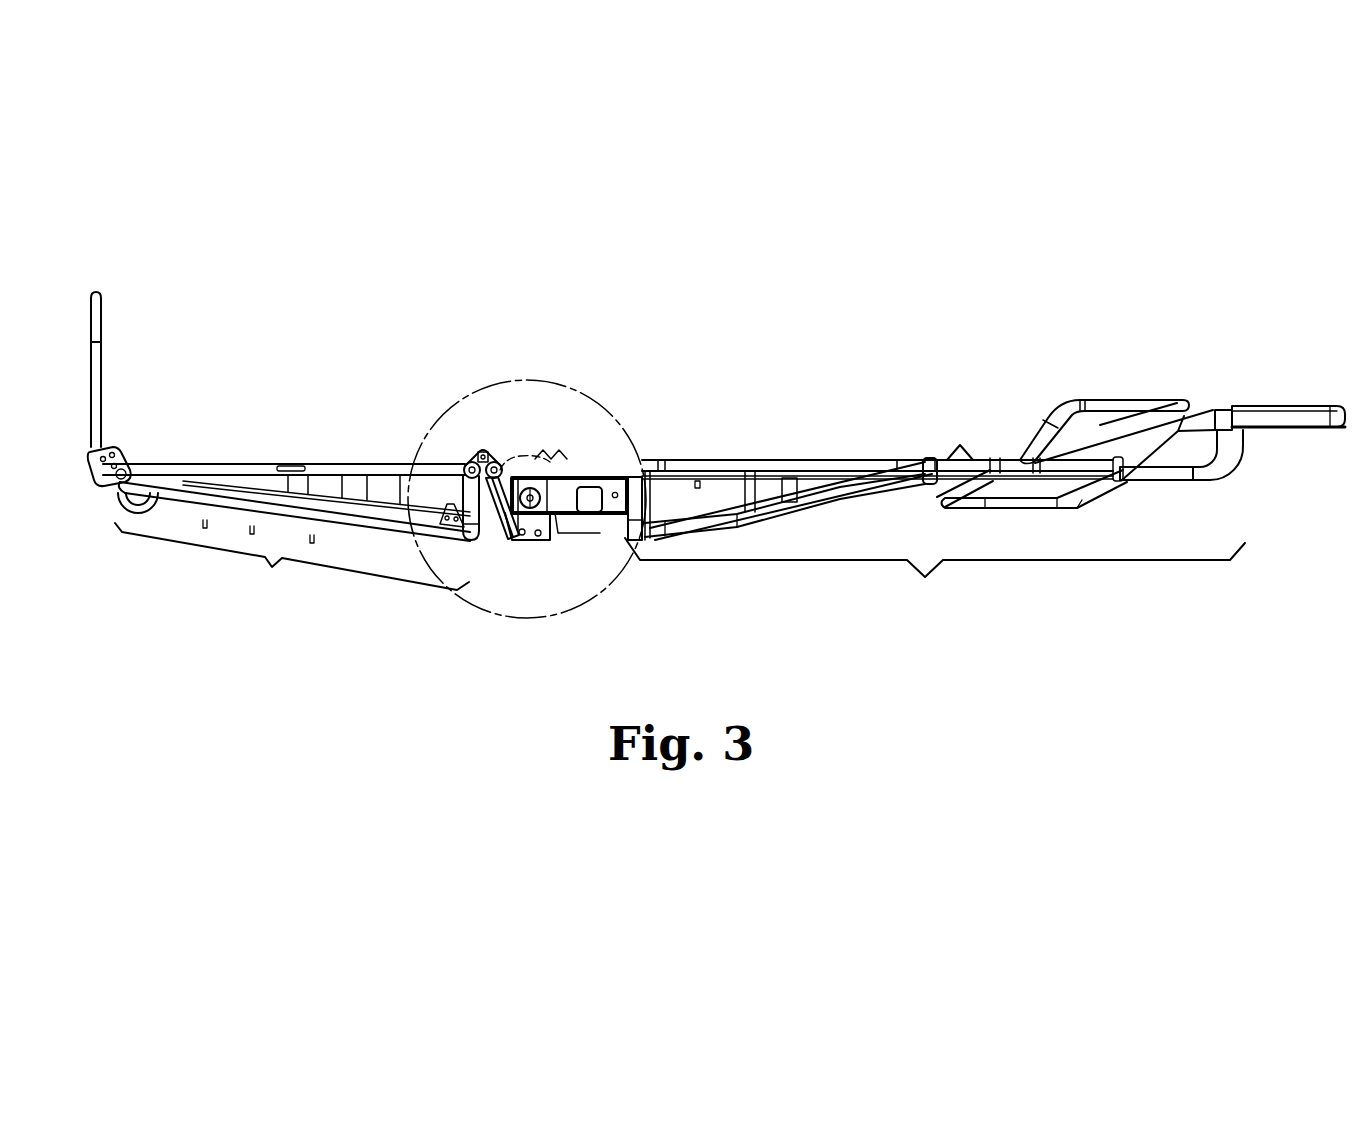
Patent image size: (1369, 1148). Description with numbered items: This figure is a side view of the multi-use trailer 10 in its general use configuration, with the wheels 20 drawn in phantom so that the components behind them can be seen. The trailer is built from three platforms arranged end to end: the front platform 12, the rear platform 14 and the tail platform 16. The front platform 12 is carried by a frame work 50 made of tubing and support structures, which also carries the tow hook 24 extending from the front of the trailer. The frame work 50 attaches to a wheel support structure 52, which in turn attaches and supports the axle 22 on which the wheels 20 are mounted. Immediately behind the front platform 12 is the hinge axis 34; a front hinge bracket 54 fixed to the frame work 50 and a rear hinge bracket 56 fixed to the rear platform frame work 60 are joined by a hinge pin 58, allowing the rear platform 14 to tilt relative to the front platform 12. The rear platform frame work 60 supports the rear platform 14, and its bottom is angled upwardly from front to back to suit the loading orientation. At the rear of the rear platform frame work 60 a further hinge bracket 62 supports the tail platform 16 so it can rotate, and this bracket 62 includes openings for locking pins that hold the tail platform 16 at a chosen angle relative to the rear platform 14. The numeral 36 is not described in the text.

The multi-use trailer 10 is at (800, 287).
The front platform 12 is at (790, 462).
The rear platform 14 is at (233, 464).
The tail platform 16 is at (102, 358).
The wheels 20 is at (617, 580).
The axle 22 is at (533, 520).
The tow hook 24 is at (1320, 418).
The hinge axis 34 is at (490, 455).
The wheel 36 is at (103, 470).
The frame work 50 is at (935, 578).
The wheel support structure 52 is at (568, 520).
The front hinge bracket 54 is at (512, 470).
The rear hinge bracket 56 is at (470, 461).
The hinge pin 58 is at (485, 454).
The rear platform frame work 60 is at (292, 565).
The rear platform hinge bracket 62 is at (120, 455).